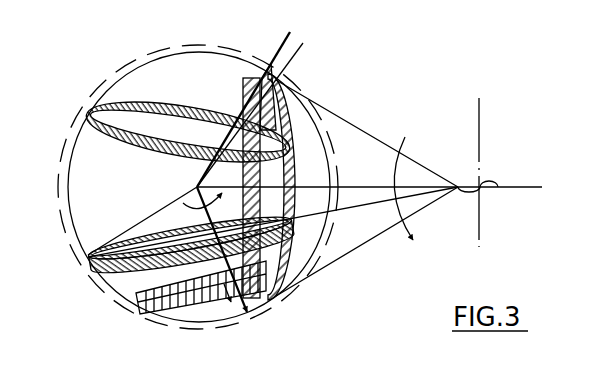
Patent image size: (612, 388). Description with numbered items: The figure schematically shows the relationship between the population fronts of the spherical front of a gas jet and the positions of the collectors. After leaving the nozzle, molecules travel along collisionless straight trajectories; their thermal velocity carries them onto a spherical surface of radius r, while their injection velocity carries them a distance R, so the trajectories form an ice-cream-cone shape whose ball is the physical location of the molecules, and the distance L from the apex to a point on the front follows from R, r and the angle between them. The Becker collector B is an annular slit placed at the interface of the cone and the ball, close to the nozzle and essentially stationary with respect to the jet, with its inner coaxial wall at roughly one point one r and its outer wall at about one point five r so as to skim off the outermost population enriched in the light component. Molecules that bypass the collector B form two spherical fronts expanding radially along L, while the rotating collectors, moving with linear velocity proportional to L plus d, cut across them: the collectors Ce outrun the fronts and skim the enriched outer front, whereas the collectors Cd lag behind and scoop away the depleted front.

The ball radius r is at (199, 187).
The injection distance R is at (207, 187).
The radial dimension of the nozzle d is at (369, 172).
The radial expansion distance L is at (273, 222).
The Becker collector B is at (296, 128).
The depleted-front collectors Cd is at (108, 140).
The enriched-front collectors Ce is at (122, 281).